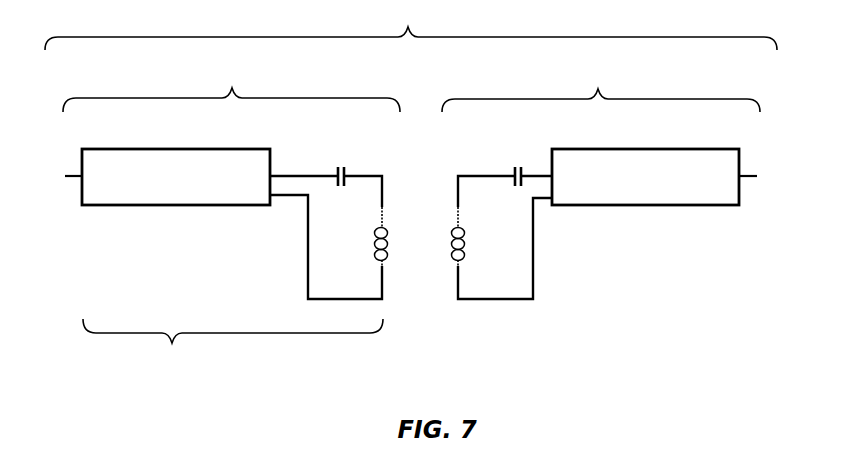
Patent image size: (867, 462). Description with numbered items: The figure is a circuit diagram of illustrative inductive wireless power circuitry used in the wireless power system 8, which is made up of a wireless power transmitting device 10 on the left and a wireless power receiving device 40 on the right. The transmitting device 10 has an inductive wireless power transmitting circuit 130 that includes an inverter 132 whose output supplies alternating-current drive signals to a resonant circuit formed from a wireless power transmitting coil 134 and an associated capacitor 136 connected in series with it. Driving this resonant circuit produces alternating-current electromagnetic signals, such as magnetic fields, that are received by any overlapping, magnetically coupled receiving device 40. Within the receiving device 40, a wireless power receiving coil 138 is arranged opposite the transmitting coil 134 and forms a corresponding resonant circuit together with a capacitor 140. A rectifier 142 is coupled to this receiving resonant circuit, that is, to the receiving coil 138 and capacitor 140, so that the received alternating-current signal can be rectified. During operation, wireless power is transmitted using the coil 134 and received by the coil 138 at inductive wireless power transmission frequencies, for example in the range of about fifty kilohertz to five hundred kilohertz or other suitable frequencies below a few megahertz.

The wireless power system 8 is at (411, 28).
The wireless power transmitting device 10 is at (231, 89).
The wireless power receiving device 40 is at (601, 89).
The inductive wireless power transmitting circuit 130 is at (233, 343).
The inverter 132 is at (177, 206).
The wireless power transmitting coil 134 is at (396, 239).
The capacitor 136 is at (342, 151).
The wireless power receiving coil 138 is at (446, 279).
The capacitor 140 is at (510, 151).
The rectifier 142 is at (646, 206).